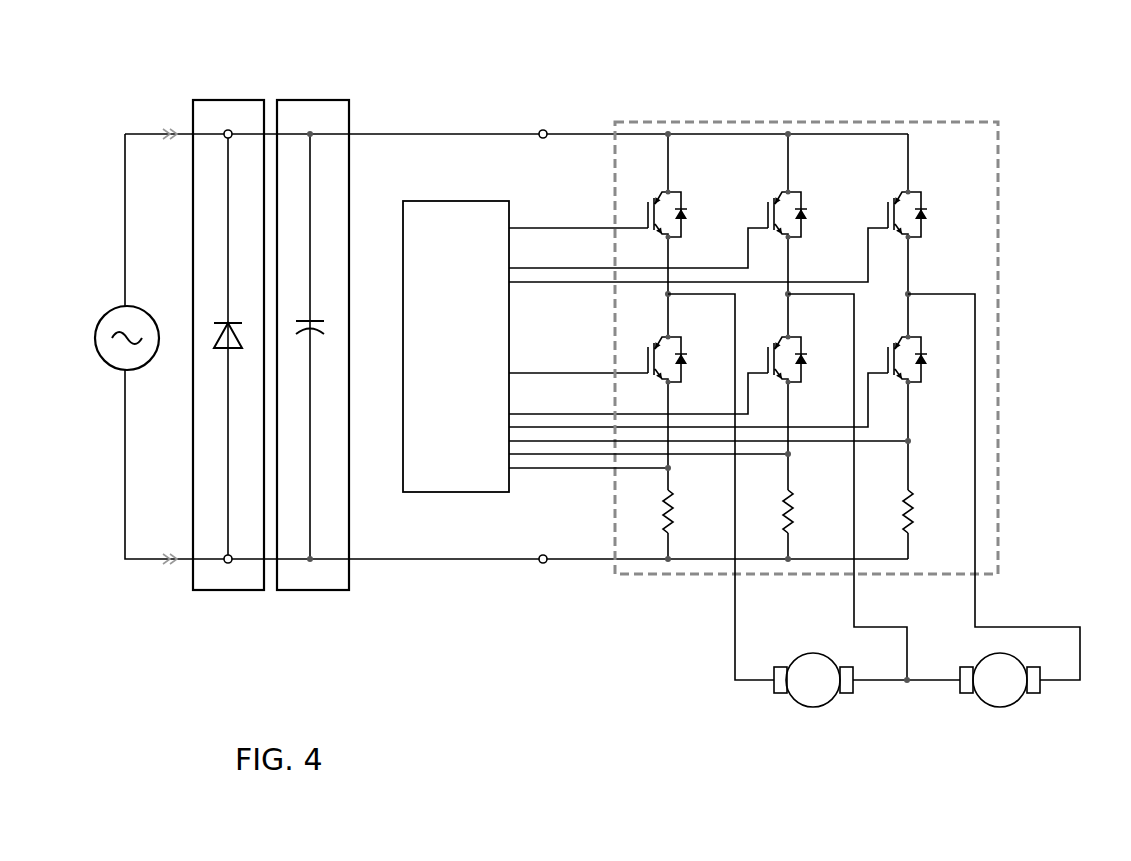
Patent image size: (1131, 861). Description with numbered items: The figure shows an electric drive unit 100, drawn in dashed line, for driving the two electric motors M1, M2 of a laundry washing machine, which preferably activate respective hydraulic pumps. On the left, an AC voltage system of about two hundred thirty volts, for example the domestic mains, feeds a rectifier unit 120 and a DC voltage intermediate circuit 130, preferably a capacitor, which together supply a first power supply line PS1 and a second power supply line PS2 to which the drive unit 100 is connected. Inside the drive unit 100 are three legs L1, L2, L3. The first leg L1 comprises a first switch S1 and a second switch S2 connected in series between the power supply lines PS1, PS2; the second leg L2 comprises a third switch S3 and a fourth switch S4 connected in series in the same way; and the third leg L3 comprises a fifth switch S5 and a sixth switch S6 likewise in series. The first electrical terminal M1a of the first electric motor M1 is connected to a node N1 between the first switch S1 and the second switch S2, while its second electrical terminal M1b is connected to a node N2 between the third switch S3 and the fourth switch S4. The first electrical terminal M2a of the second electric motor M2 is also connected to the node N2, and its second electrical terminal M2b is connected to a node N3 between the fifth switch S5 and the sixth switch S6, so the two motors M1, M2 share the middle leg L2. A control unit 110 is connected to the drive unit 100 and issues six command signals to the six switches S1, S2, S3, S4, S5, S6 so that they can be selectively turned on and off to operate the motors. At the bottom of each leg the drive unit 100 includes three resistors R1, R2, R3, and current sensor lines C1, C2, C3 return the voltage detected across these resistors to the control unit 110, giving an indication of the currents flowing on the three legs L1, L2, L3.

The rectifier unit 120 is at (230, 100).
The DC voltage intermediate circuit 130 is at (315, 100).
The control unit 110 is at (447, 218).
The electric drive unit 100 is at (838, 120).
The first power supply line PS1 is at (543, 130).
The second power supply line PS2 is at (546, 565).
The first leg L1 is at (662, 103).
The second leg L2 is at (782, 100).
The third leg L3 is at (912, 102).
The first switch S1 is at (640, 196).
The second switch S2 is at (640, 358).
The third switch S3 is at (762, 194).
The fourth switch S4 is at (806, 346).
The fifth switch S5 is at (936, 190).
The sixth switch S6 is at (921, 406).
The node N1 is at (655, 294).
The node N2 is at (782, 300).
The node N3 is at (919, 285).
The resistor R1 is at (681, 518).
The resistor R2 is at (801, 521).
The resistor R3 is at (917, 521).
The current sensor line C1 is at (522, 470).
The current sensor line C2 is at (553, 456).
The current sensor line C3 is at (573, 443).
The first electric motor M1 is at (816, 714).
The first electrical terminal of the first electric motor M1a is at (771, 706).
The second electrical terminal of the first electric motor M1b is at (857, 706).
The second electric motor M2 is at (1003, 714).
The first electrical terminal of the second electric motor M2a is at (958, 706).
The second electrical terminal of the second electric motor M2b is at (1049, 706).